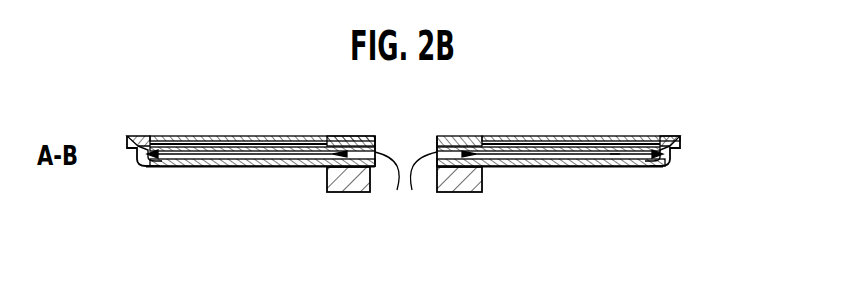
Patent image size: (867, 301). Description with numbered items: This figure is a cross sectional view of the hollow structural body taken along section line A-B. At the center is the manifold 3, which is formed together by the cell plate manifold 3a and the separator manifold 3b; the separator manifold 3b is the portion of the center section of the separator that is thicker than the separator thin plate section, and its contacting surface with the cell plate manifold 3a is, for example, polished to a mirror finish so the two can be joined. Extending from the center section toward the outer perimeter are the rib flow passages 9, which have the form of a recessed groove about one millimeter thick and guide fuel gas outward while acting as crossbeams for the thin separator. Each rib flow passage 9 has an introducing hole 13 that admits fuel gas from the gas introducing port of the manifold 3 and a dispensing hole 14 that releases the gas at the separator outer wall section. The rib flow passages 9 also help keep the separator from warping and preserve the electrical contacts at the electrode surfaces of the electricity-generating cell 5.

The manifold 3 is at (260, 213).
The cell plate manifold 3a is at (307, 168).
The separator manifold 3b is at (348, 210).
The electricity-generating cell 5 is at (572, 137).
The rib flow passage 9 is at (575, 168).
The introducing hole 13 is at (387, 136).
The dispensing hole 14 is at (150, 168).